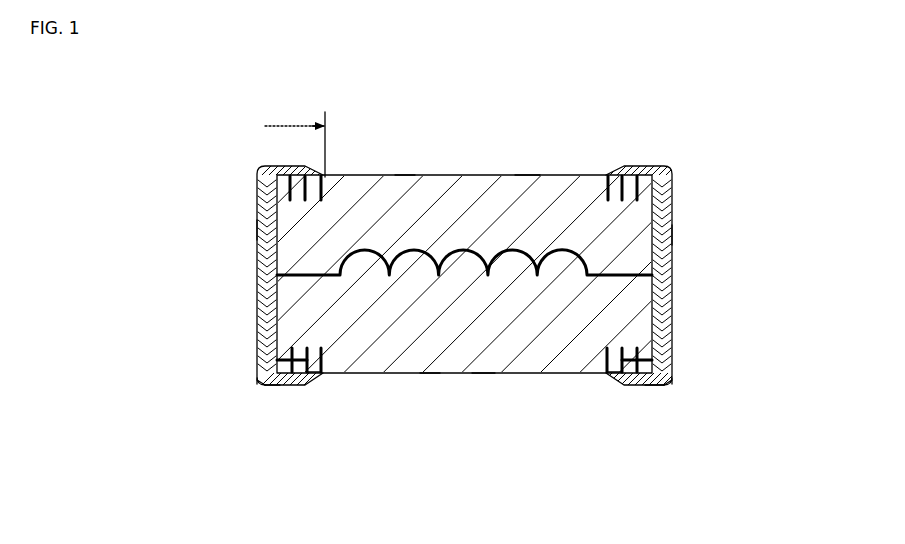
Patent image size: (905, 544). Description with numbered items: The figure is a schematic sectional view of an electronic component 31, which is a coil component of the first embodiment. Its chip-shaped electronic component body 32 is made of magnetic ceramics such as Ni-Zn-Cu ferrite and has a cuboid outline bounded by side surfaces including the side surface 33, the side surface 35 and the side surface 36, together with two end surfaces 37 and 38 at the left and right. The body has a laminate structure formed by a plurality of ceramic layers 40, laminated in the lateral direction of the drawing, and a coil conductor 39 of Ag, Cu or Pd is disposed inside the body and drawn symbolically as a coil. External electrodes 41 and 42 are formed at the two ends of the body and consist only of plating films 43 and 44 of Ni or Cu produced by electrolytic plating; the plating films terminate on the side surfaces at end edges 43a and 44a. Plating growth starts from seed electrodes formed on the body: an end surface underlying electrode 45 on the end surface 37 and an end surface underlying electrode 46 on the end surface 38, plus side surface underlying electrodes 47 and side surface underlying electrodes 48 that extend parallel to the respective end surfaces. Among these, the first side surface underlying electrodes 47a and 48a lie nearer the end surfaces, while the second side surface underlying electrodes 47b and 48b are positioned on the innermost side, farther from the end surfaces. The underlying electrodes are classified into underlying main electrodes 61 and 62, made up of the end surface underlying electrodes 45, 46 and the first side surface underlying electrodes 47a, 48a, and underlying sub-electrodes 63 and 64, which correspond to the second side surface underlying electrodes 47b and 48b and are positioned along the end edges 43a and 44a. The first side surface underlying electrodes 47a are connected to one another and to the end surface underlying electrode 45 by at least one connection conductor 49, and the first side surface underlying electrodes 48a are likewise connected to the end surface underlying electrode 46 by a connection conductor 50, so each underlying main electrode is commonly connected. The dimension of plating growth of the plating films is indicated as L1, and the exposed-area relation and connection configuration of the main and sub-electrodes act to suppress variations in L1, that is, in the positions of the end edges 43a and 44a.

The electronic component 31 is at (489, 81).
The electronic component body 32 is at (529, 174).
The side surface 33 is at (405, 173).
The side surface 35 is at (430, 375).
The side surface 36 is at (482, 375).
The end surface 37 is at (266, 230).
The end surface 38 is at (666, 236).
The coil conductor 39 is at (463, 250).
The ceramic layers 40 is at (623, 176).
The external electrode 41 is at (257, 172).
The external electrode 42 is at (674, 178).
The plating film 43 is at (265, 300).
The end edge 43a is at (325, 175).
The plating film 44 is at (663, 284).
The end edge 44a is at (607, 175).
The end surface underlying electrode 45 is at (271, 386).
The end surface underlying electrode 46 is at (634, 378).
The side surface underlying electrodes 47 is at (365, 478).
The first side surface underlying electrodes 47a is at (289, 378).
The second side surface underlying electrode 47b is at (324, 374).
The side surface underlying electrodes 48 is at (645, 483).
The first side surface underlying electrodes 48a is at (618, 376).
The second side surface underlying electrode 48b is at (608, 373).
The connection conductor 49 is at (283, 357).
The connection conductor 50 is at (645, 358).
The underlying main electrode 61 is at (256, 412).
The underlying main electrode 62 is at (650, 420).
The underlying sub-electrode 63 is at (332, 425).
The underlying sub-electrode 64 is at (576, 429).
The dimension of plating growth L1 is at (307, 128).